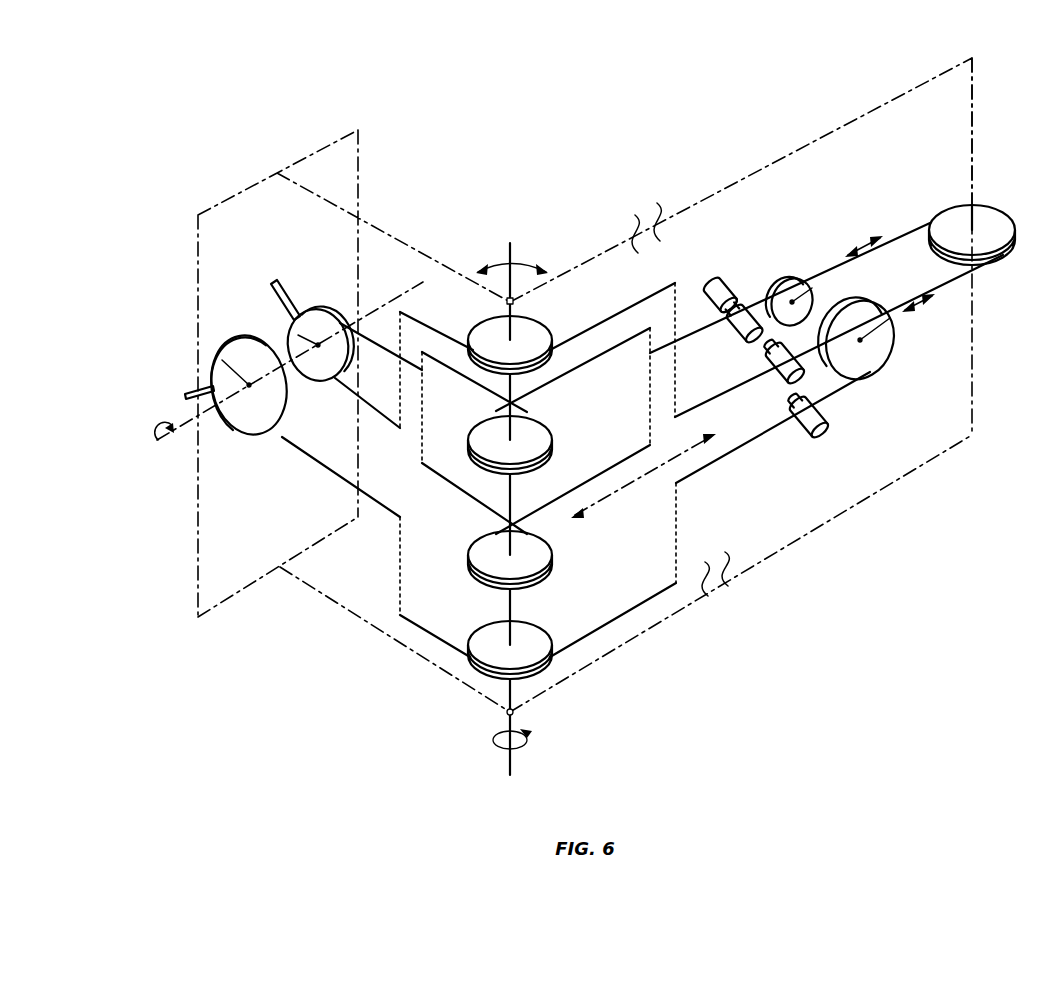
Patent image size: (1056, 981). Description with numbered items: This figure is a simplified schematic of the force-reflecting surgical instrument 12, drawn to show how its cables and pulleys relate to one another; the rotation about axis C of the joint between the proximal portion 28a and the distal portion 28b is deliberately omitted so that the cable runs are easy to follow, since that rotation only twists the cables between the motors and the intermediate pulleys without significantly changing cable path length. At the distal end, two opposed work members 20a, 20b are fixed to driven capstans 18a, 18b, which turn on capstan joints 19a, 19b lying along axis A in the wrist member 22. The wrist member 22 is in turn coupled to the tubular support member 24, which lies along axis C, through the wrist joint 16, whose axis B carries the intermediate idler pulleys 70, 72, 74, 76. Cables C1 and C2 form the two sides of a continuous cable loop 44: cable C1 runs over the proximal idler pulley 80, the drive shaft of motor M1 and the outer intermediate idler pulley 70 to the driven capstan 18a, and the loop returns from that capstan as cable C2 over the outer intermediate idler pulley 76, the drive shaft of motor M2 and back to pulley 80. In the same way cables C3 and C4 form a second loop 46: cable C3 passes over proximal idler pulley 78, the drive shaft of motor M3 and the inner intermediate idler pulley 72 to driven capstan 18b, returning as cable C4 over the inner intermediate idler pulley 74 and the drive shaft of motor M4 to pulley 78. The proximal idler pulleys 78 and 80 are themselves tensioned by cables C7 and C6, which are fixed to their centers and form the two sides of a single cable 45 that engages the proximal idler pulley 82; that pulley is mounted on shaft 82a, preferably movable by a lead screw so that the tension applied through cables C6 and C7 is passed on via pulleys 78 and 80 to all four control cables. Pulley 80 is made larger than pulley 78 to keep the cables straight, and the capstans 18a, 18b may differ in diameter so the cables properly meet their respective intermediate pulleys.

The instrument 12 is at (563, 82).
The wrist joint 16 is at (516, 713).
The driven capstan 18a is at (221, 385).
The driven capstan 18b is at (293, 322).
The capstan joint 19a is at (213, 345).
The capstan joint 19b is at (289, 322).
The work member 20a is at (190, 393).
The work member 20b is at (280, 283).
The wrist member 22 is at (391, 641).
The tubular support member 24 is at (627, 643).
The proximal portion 28a is at (729, 152).
The distal portion 28b is at (450, 187).
The cable loop 44 is at (646, 297).
The cable 45 is at (904, 233).
The cable loop 46 is at (688, 318).
The intermediate idler pulley 70 is at (538, 635).
The intermediate idler pulley 72 is at (542, 558).
The intermediate idler pulley 74 is at (538, 448).
The intermediate idler pulley 76 is at (538, 342).
The proximal idler pulley 78 is at (798, 288).
The proximal idler pulley 80 is at (882, 354).
The proximal idler pulley 82 is at (998, 222).
The shaft 82a is at (974, 146).
The motor M1 is at (832, 416).
The motor M2 is at (777, 383).
The motor M3 is at (749, 318).
The motor M4 is at (726, 290).
The cable C1 is at (300, 449).
The cable C2 is at (430, 317).
The cable C3 is at (352, 335).
The cable C4 is at (355, 328).
The cable C6 is at (890, 253).
The cable C7 is at (963, 277).
The axis A- A is at (283, 364).
The axis B- B is at (512, 508).
The axis C- C is at (641, 477).